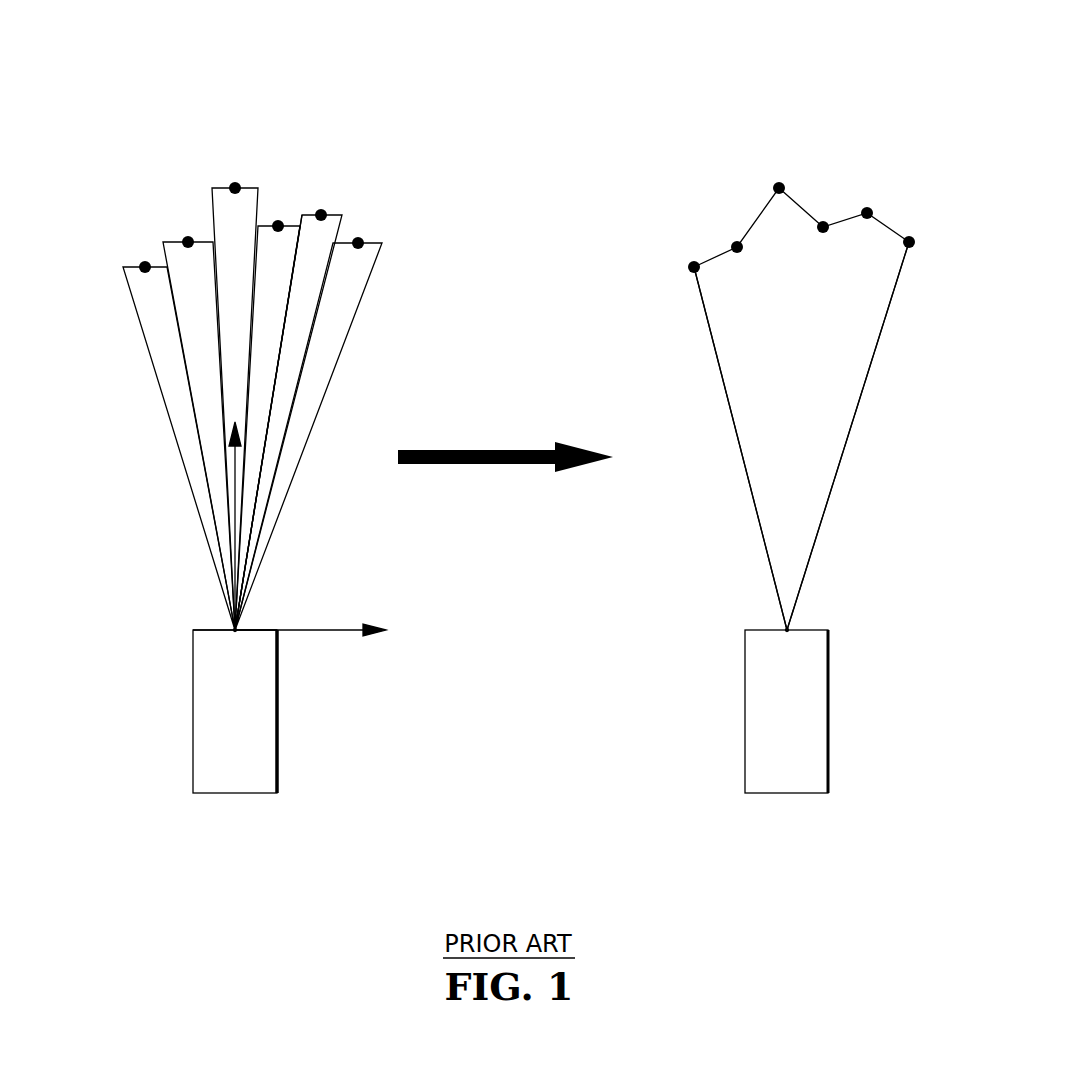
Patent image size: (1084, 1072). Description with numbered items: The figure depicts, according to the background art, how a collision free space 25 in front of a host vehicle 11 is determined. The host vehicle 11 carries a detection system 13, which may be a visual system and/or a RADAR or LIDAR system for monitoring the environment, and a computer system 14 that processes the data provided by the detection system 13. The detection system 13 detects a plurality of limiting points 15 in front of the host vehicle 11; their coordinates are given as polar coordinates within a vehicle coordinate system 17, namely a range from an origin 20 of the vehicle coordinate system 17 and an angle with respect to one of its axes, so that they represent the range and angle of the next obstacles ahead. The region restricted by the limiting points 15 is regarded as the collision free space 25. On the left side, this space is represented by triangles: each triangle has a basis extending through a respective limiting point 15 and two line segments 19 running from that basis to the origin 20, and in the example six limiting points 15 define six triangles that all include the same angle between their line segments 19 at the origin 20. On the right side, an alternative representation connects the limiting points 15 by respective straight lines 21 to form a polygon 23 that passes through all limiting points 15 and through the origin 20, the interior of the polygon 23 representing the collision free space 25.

The host vehicle 11 is at (267, 787).
The detection system 13 is at (233, 641).
The computer system 14 is at (267, 668).
The limiting points 15 is at (278, 224).
The vehicle coordinate system 17 is at (293, 569).
The line segments 19 is at (178, 332).
The origin 20 is at (240, 627).
The straight lines 21 is at (802, 200).
The polygon 23 is at (847, 452).
The collision free space 25 is at (268, 303).